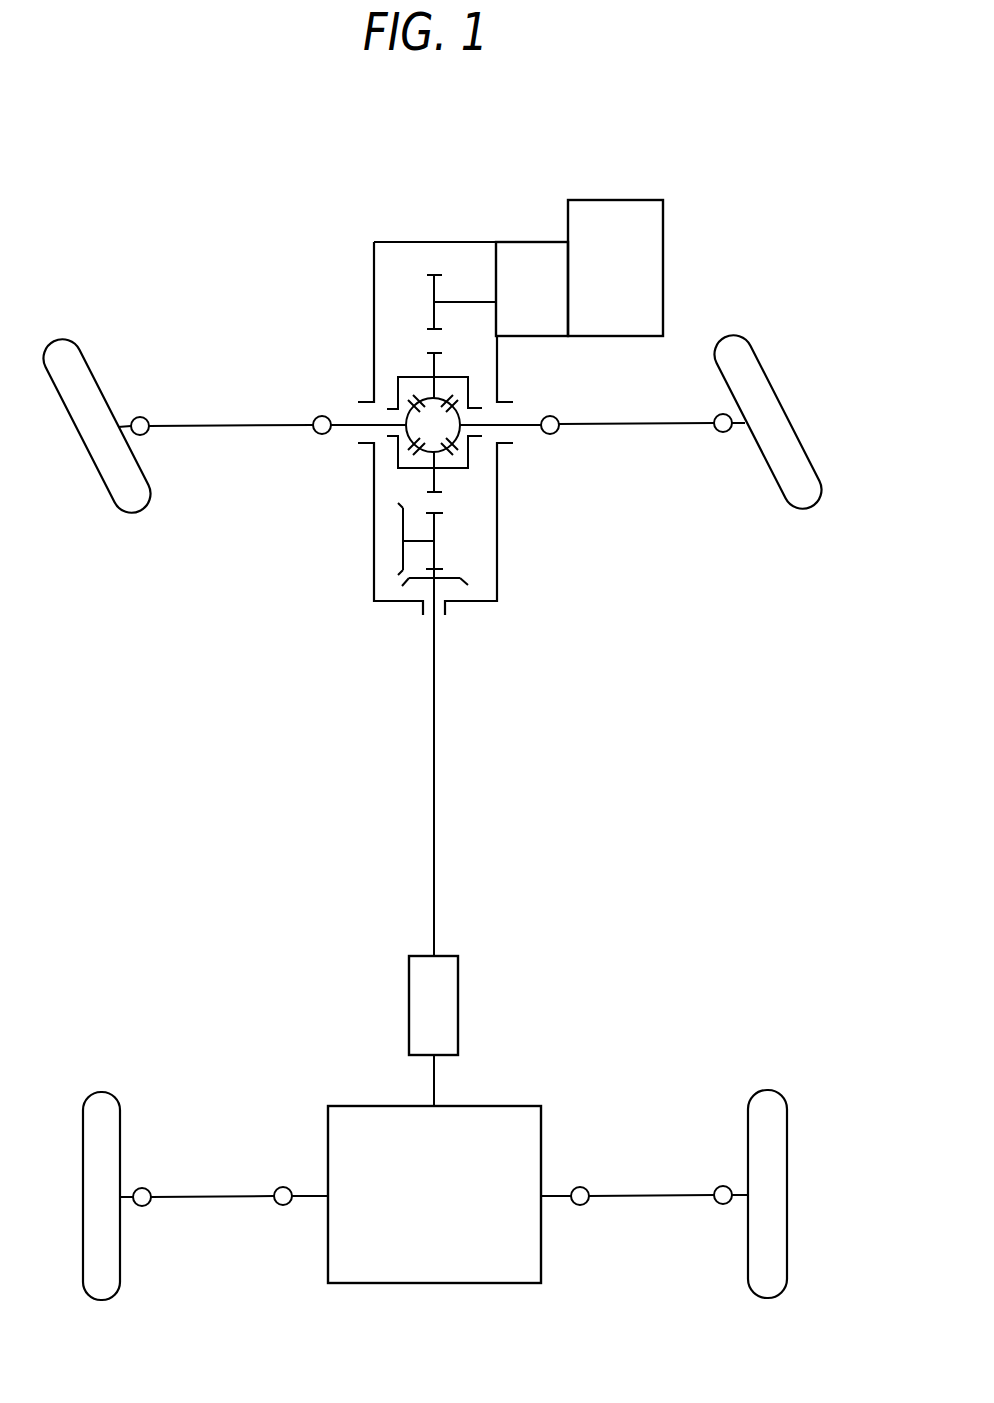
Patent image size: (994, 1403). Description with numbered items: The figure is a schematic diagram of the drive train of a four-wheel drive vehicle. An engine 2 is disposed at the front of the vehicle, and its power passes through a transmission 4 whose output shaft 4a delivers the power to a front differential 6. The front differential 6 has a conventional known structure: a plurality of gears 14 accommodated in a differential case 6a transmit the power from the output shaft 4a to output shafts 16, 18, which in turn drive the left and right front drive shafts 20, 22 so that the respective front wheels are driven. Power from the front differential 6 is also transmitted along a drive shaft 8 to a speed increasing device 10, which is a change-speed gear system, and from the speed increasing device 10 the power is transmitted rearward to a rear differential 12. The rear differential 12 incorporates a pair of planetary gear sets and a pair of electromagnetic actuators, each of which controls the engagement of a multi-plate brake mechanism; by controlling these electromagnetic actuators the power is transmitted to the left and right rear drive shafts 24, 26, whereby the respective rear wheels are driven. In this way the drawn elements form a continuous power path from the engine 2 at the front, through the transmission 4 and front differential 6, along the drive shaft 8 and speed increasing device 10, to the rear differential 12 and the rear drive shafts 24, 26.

The engine 2 is at (663, 215).
The transmission 4 is at (527, 241).
The output shaft of the transmission 4a is at (465, 300).
The front differential 6 is at (395, 377).
The differential case 6a is at (470, 383).
The drive shaft 8 is at (436, 770).
The speed increasing device 10 is at (459, 995).
The rear differential 12 is at (433, 1285).
The gears 14 is at (425, 356).
The output shaft 16 is at (342, 430).
The output shaft 18 is at (522, 428).
The left front drive shaft 20 is at (204, 428).
The right front drive shaft 22 is at (628, 427).
The left rear drive shaft 24 is at (208, 1200).
The right rear drive shaft 26 is at (645, 1198).